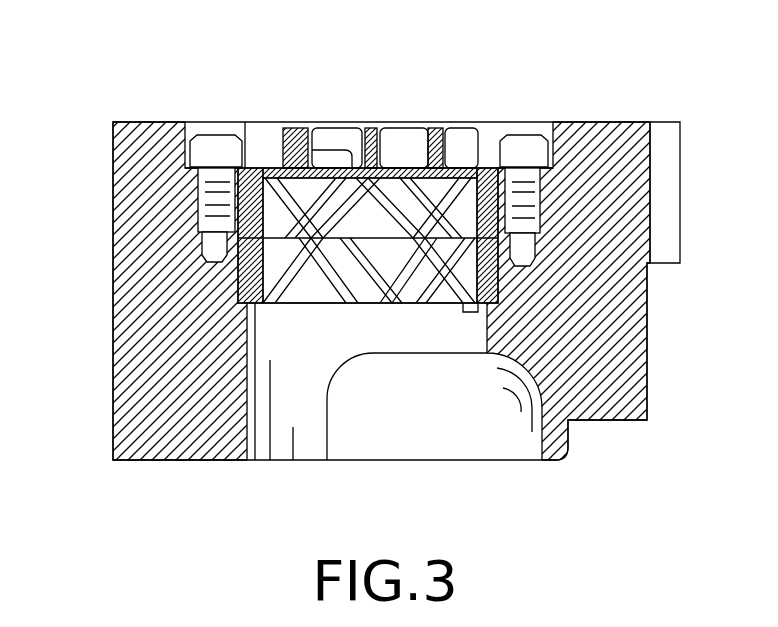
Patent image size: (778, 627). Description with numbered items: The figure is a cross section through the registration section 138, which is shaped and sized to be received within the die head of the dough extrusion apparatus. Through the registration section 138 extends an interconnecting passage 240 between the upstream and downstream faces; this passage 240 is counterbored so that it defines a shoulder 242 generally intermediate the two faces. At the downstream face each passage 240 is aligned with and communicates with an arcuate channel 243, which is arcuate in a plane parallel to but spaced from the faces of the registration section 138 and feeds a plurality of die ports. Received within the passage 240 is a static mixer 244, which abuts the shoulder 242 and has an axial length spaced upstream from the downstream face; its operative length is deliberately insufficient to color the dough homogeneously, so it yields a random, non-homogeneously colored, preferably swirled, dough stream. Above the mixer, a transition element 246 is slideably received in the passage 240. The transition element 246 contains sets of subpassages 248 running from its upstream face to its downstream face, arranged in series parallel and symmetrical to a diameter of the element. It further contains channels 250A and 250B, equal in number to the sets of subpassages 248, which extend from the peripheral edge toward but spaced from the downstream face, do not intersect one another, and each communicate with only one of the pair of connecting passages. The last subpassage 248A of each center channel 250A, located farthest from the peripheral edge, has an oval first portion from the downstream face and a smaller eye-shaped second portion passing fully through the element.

The registration section 138 is at (648, 325).
The interconnecting passage 240 is at (282, 443).
The shoulder 242 is at (247, 307).
The arcuate channel 243 is at (457, 433).
The static mixer 244 is at (493, 292).
The transition element 246 is at (360, 180).
The subpassage 248 is at (262, 180).
The last subpassage 248A is at (310, 165).
The center channel 250A is at (331, 137).
The channel 250B is at (245, 130).